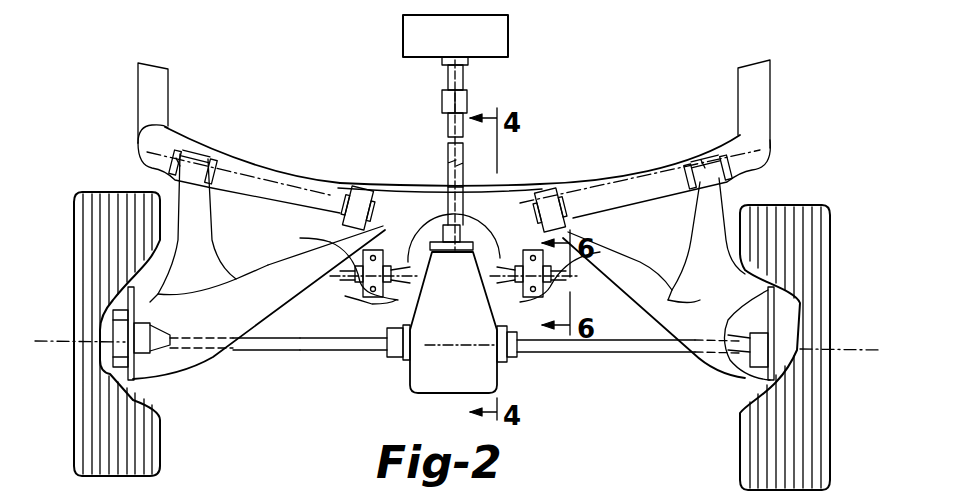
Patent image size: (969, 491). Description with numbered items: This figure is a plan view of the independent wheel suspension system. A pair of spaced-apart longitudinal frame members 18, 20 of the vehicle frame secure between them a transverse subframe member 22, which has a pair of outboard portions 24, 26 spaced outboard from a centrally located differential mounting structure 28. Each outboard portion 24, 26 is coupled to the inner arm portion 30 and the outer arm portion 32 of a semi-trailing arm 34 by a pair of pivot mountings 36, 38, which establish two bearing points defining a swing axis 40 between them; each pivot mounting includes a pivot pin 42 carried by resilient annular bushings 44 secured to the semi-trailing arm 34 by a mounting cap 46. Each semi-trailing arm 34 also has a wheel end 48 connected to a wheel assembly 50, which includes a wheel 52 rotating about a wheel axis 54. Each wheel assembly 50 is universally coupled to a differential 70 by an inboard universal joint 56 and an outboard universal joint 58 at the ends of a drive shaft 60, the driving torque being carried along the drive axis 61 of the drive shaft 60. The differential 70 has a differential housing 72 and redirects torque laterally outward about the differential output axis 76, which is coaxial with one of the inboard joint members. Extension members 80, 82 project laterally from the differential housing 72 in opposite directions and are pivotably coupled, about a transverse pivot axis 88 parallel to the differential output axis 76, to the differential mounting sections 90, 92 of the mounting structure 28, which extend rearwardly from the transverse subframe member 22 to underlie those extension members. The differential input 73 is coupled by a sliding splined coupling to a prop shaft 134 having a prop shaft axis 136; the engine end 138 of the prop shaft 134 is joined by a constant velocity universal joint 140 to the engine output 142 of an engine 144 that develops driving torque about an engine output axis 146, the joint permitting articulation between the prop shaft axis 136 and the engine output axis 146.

The longitudinal frame member 18 is at (170, 78).
The longitudinal frame member 20 is at (772, 84).
The transverse subframe member 22 is at (300, 137).
The outboard portion 24 is at (254, 170).
The outboard portion 26 is at (667, 175).
The differential mounting structure 28 is at (403, 196).
The inner arm portion 30 is at (646, 254).
The outer arm portion 32 is at (204, 226).
The semi-trailing arm 34 is at (250, 272).
The pivot mounting 36 is at (198, 153).
The pivot mounting 38 is at (356, 188).
The swing axis 40 is at (606, 188).
The pivot pin 42 is at (176, 164).
The resilient annular bushing 44 is at (707, 170).
The mounting cap 46 is at (760, 178).
The wheel end 48 is at (722, 319).
The wheel assembly 50 is at (690, 396).
The wheel 52 is at (741, 439).
The wheel axis 54 is at (47, 350).
The inboard universal joint 56 is at (394, 358).
The outboard universal joint 58 is at (150, 337).
The drive shaft 60 is at (246, 351).
The drive axis 61 is at (308, 351).
The differential 70 is at (406, 392).
The differential housing 72 is at (404, 302).
The differential input 73 is at (492, 235).
The differential output axis 76 is at (472, 346).
The extension member 80 is at (368, 302).
The extension member 82 is at (514, 357).
The transverse pivot axis 88 is at (372, 252).
The differential mounting section 90 is at (332, 247).
The differential mounting section 92 is at (598, 254).
The prop shaft 134 is at (463, 168).
The prop shaft axis 136 is at (463, 170).
The engine end 138 is at (448, 125).
The constant velocity universal joint 140 is at (468, 103).
The engine output 142 is at (442, 61).
The engine 144 is at (509, 38).
The engine output axis 146 is at (447, 78).